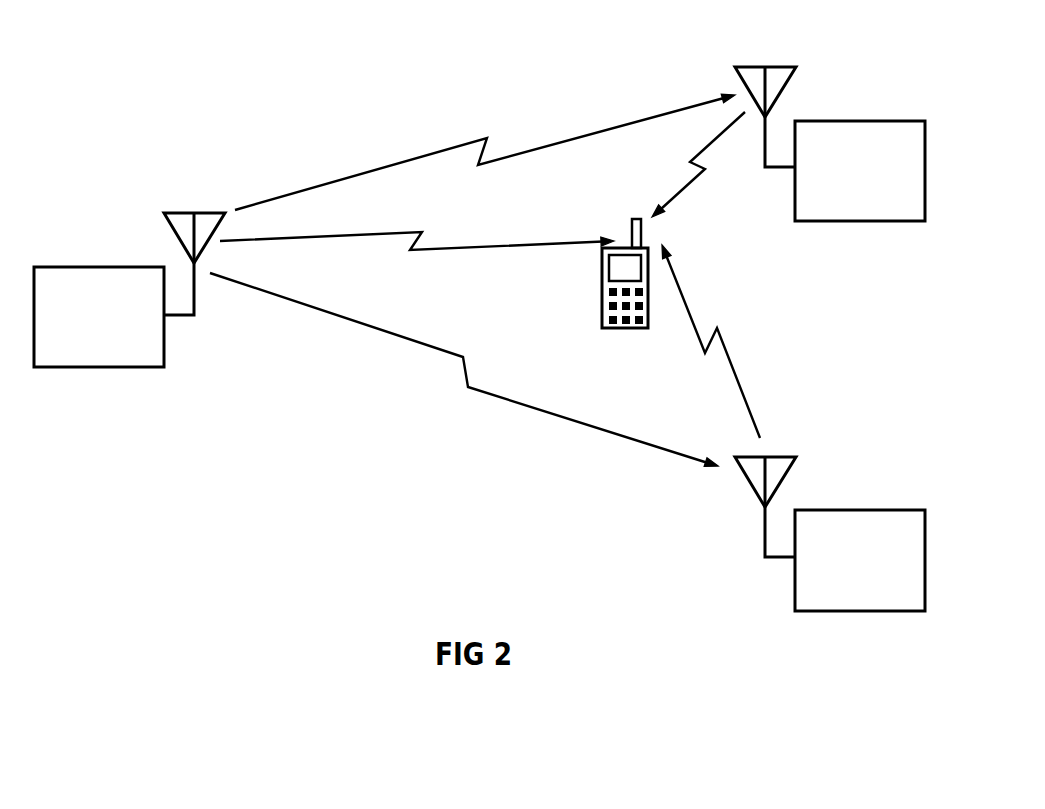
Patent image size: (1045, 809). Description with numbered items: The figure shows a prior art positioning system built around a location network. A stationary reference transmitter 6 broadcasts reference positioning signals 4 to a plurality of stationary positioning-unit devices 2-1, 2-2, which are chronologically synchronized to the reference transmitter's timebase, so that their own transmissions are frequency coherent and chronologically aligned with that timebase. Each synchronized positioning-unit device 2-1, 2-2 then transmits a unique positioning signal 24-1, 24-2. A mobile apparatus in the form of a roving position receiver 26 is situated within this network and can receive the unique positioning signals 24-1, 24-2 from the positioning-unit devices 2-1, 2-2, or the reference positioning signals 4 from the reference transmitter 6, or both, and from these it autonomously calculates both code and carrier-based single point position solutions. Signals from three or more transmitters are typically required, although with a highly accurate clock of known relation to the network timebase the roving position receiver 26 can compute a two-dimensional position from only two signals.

The reference transmitter 6 is at (101, 367).
The reference positioning signal 4 is at (336, 178).
The positioning-unit device 2-1 is at (887, 221).
The positioning-unit device 2-2 is at (890, 510).
The roving position receiver 26 is at (602, 283).
The unique positioning signal 24-1 is at (668, 200).
The unique positioning signal 24-2 is at (730, 355).